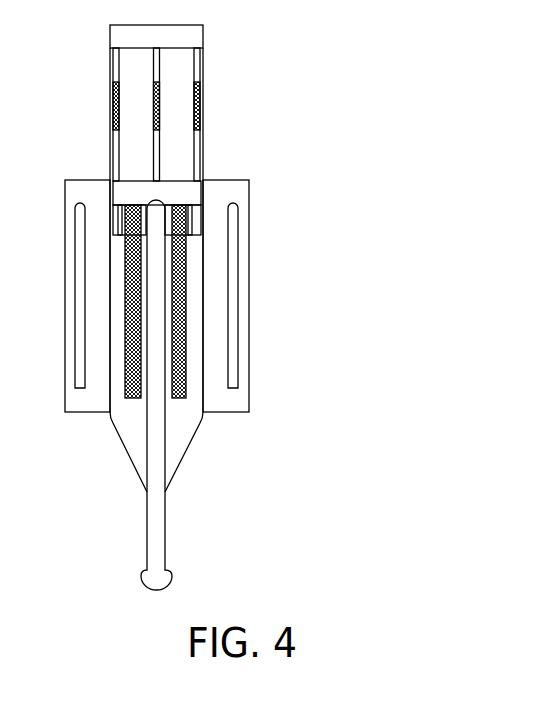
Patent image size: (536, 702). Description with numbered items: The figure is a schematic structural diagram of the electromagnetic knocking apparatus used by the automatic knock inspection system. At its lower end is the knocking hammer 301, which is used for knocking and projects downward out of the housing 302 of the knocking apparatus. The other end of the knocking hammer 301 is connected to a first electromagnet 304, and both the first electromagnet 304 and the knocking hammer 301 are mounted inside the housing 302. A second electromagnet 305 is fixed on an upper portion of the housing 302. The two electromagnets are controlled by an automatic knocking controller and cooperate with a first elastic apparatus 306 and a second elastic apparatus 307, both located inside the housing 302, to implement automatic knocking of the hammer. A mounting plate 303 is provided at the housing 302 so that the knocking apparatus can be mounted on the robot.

The knocking hammer 301 is at (158, 533).
The housing 302 is at (182, 435).
The mounting plate 303 is at (218, 315).
The first electromagnet 304 is at (170, 40).
The second electromagnet 305 is at (183, 195).
The first elastic apparatus 306 is at (183, 268).
The second elastic apparatus 307 is at (197, 105).